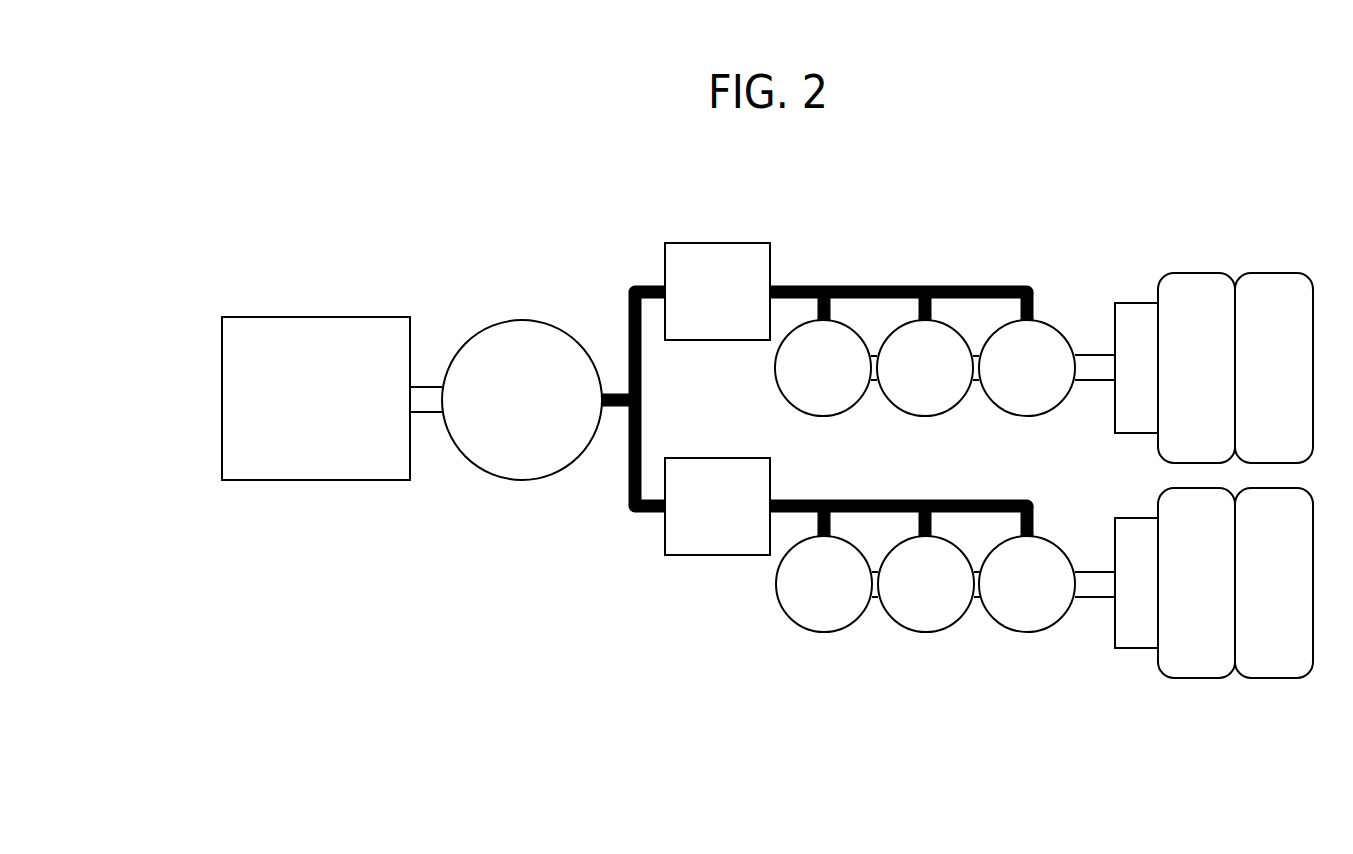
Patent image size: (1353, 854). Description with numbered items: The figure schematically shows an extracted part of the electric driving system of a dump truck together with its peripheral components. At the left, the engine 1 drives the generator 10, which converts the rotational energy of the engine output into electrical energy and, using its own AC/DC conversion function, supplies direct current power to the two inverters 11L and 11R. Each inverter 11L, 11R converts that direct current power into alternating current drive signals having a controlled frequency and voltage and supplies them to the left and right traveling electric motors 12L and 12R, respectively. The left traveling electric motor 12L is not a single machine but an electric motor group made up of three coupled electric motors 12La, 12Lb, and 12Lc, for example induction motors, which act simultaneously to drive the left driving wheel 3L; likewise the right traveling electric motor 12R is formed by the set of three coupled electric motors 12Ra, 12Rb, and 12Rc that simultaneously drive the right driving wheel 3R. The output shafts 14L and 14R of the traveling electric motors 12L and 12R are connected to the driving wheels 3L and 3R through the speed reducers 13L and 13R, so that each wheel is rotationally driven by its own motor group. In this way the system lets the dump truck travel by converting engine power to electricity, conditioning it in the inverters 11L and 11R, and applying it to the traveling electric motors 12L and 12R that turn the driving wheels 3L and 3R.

The engine 1 is at (340, 318).
The generator 10 is at (556, 324).
The inverter 11L is at (720, 243).
The inverter 11R is at (712, 556).
The traveling electric motor 12L is at (815, 206).
The traveling electric motor 12R is at (1040, 747).
The electric motor 12La is at (853, 322).
The electric motor 12Lb is at (955, 322).
The electric motor 12Lc is at (1057, 322).
The electric motor 12Ra is at (797, 631).
The electric motor 12Rb is at (898, 631).
The electric motor 12Rc is at (1000, 631).
The speed reducer 13L is at (1137, 310).
The speed reducer 13R is at (1137, 645).
The output shaft 14L is at (1094, 376).
The output shaft 14R is at (1095, 576).
The driving wheel 3L is at (1313, 266).
The driving wheel 3R is at (1313, 685).